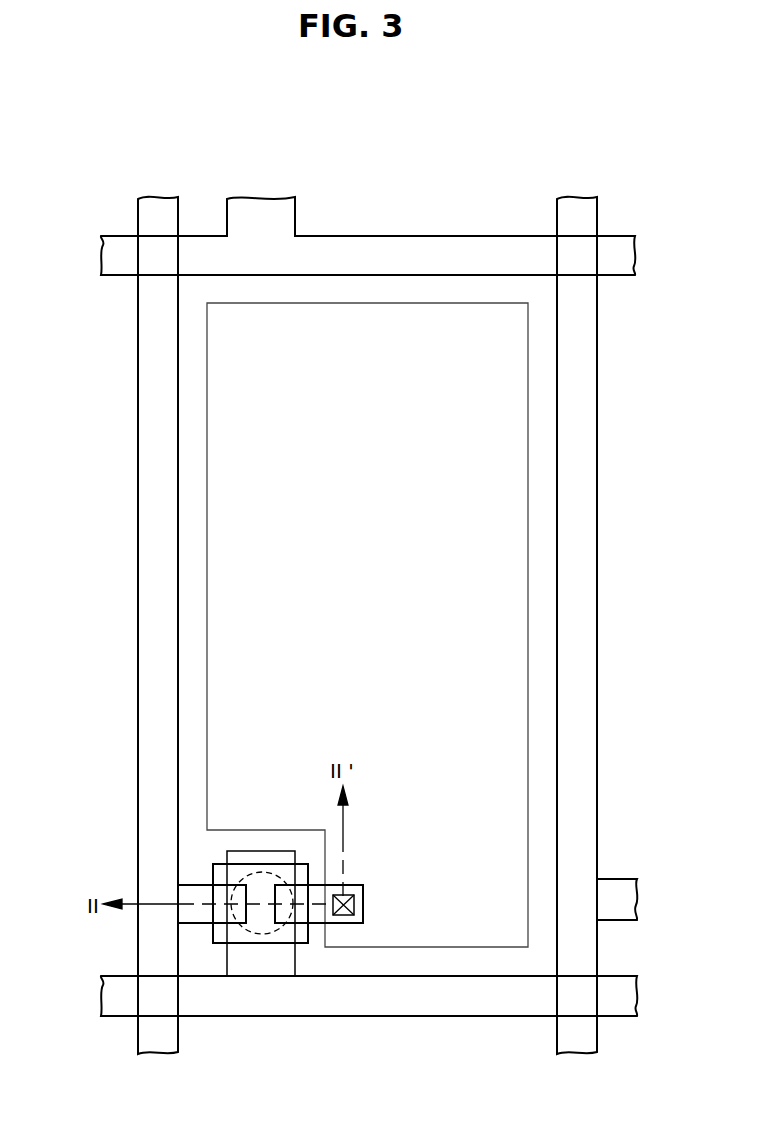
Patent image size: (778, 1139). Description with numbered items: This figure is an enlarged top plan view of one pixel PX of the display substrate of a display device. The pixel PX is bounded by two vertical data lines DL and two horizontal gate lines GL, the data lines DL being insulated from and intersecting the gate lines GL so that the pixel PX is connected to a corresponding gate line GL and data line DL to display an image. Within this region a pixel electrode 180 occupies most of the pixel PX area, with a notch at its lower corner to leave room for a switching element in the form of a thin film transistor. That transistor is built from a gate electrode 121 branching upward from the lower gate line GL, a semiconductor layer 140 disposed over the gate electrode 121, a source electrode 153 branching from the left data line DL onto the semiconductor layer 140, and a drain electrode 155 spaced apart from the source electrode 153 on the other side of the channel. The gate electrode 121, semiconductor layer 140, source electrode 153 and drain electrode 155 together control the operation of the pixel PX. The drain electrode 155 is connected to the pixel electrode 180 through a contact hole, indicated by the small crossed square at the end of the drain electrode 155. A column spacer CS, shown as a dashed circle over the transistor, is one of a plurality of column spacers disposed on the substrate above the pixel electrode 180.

The pixel PX is at (100, 172).
The data line DL is at (158, 197).
The gate line GL is at (101, 256).
The pixel electrode 180 is at (528, 627).
The gate electrode 121 is at (290, 936).
The semiconductor layer 140 is at (220, 945).
The source electrode 153 is at (196, 925).
The drain electrode 155 is at (310, 945).
The column spacer CS is at (261, 935).